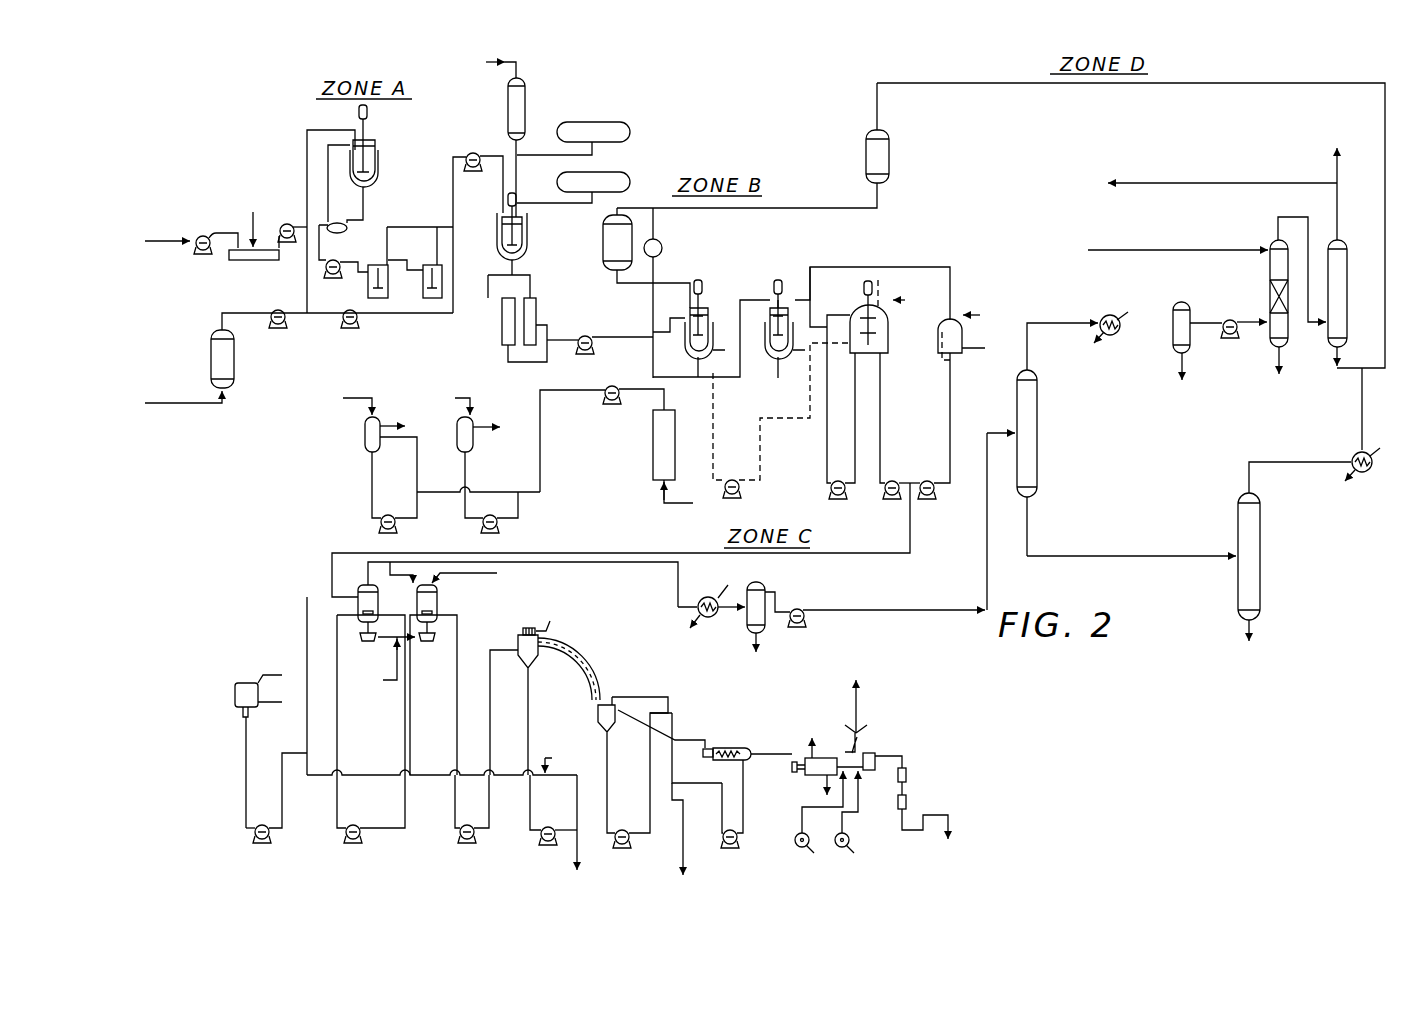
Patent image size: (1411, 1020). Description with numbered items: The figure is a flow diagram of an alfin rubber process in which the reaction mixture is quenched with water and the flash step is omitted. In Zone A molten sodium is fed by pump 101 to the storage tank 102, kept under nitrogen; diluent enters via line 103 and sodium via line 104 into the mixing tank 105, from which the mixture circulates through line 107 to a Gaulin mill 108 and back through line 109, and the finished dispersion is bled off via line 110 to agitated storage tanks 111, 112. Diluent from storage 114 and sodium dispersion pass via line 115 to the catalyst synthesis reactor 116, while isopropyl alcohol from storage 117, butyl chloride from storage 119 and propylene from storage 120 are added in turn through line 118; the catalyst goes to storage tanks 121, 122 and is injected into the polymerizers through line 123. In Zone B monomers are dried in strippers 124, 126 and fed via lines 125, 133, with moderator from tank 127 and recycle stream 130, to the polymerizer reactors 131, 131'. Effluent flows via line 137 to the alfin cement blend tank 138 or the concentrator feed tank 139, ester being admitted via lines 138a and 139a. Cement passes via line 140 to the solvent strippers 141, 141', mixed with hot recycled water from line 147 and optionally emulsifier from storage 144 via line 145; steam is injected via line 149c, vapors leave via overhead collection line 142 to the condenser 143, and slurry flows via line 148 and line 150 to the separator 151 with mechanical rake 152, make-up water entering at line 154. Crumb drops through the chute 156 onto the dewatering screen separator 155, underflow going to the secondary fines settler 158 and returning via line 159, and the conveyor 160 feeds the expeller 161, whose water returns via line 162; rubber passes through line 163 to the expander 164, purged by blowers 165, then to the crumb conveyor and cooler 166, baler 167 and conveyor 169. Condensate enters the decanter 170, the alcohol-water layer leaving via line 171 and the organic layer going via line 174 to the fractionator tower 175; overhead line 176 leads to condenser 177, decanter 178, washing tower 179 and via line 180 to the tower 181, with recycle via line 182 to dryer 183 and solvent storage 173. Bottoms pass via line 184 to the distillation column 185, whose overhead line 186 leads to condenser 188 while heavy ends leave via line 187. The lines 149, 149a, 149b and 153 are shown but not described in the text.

The pump 101 is at (205, 235).
The storage tank 102 is at (236, 262).
The line 103 is at (220, 316).
The line 104 is at (306, 134).
The mixing tank 105 is at (378, 160).
The line 107 is at (366, 196).
The Gaulin mill 108 is at (340, 234).
The line 109 is at (324, 158).
The line 110 is at (306, 254).
The storage tank 111 is at (387, 300).
The storage tank 112 is at (427, 303).
The diluent storage 114 is at (210, 360).
The line 115 is at (453, 207).
The catalyst synthesis reactor 116 is at (528, 233).
The isopropyl alcohol storage 117 is at (526, 92).
The line 118 is at (518, 173).
The butyl chloride storage 119 is at (598, 122).
The propylene storage 120 is at (618, 173).
The catalyst storage tank 121 is at (500, 325).
The catalyst storage tank 122 is at (538, 297).
The line 123 is at (565, 335).
The stripper 124 is at (362, 438).
The line 125 is at (496, 492).
The stripper 126 is at (476, 440).
The moderator tank 127 is at (652, 441).
The recycle stream 130 is at (722, 210).
The polymerization reactor 131 is at (698, 326).
The polymerization reactor 131' is at (831, 389).
The line 133 is at (573, 395).
The line 137 is at (800, 292).
The alfin cement blend tank 138 is at (886, 355).
The line 138a is at (897, 300).
The concentrator feed tank 139 is at (957, 355).
The line 139a is at (963, 316).
The line 140 is at (610, 552).
The solvent stripper 141 is at (357, 598).
The solvent stripper 141' is at (454, 613).
The overhead collection line 142 is at (565, 564).
The condenser 143 is at (696, 611).
The emulsifying agent storage 144 is at (234, 698).
The line 145 is at (282, 805).
The line 147 is at (307, 622).
The line 148 is at (338, 700).
The steam line 149 is at (393, 688).
The steam line 149a is at (481, 591).
The valve 149b is at (394, 628).
The line 149c is at (399, 570).
The line 150 is at (457, 700).
The separator 151 is at (538, 660).
The mechanical rake 152 is at (555, 616).
The water line 153 is at (525, 732).
The line 154 is at (575, 800).
The dewatering screen separator 155 is at (597, 712).
The chute 156 is at (580, 657).
The secondary fines settler 158 is at (676, 702).
The line 159 is at (638, 697).
The conveyor 160 is at (708, 740).
The expeller 161 is at (742, 748).
The line 162 is at (722, 820).
The line 163 is at (770, 750).
The expander 164 is at (825, 755).
The blowers 165 is at (840, 850).
The crumb conveyor and cooler 166 is at (888, 752).
The baler 167 is at (908, 774).
The conveyor 169 is at (915, 815).
The decanter 170 is at (760, 588).
The line 171 is at (750, 642).
The solvent storage 173 is at (602, 245).
The line 174 is at (622, 292).
The fractionator tower 175 is at (1038, 462).
The line 176 is at (1051, 323).
The condenser 177 is at (1100, 314).
The decanter 178 is at (1172, 334).
The washing tower 179 is at (1268, 278).
The line 180 is at (1293, 218).
The tower 181 is at (1349, 253).
The line 182 is at (1036, 86).
The dryer 183 is at (891, 158).
The line 184 is at (1130, 555).
The distillation column 185 is at (1262, 548).
The line 186 is at (1290, 463).
The line 187 is at (1255, 620).
The condenser 188 is at (1366, 473).